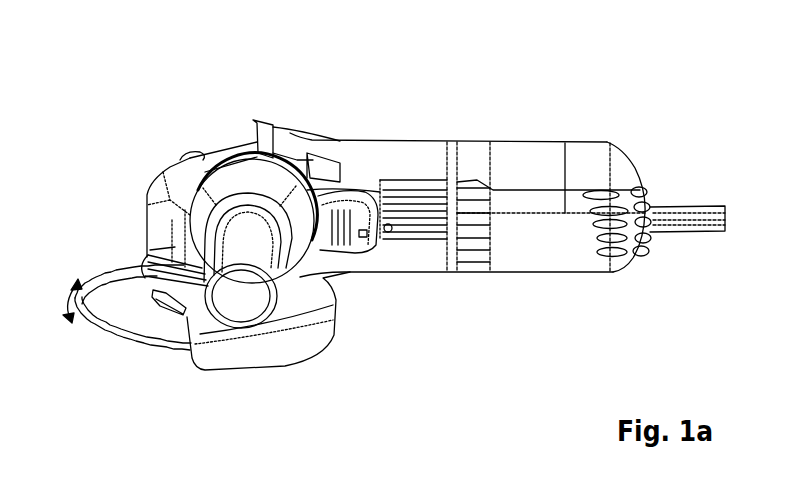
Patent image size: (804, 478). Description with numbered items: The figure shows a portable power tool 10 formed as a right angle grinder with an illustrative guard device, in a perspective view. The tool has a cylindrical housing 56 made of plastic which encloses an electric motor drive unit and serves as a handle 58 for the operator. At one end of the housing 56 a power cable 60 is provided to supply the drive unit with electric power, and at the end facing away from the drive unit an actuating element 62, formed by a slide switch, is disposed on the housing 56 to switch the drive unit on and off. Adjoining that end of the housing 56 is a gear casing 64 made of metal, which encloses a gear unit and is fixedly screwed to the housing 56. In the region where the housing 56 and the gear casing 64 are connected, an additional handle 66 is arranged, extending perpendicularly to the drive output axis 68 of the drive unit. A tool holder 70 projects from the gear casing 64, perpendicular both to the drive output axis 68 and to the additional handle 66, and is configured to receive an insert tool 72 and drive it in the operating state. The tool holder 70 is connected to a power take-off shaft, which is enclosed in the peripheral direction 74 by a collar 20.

The gear head housing 10 is at (297, 353).
The collar 20 is at (138, 268).
The housing 56 is at (388, 152).
The handle 58 is at (510, 155).
The power cable 60 is at (680, 217).
The actuating element 62 is at (360, 233).
The gear casing 64 is at (165, 177).
The additional handle 66 is at (238, 330).
The drive output axis 68 is at (565, 143).
The tool holder 70 is at (93, 275).
The insert tool 72 is at (123, 326).
The peripheral direction 74 is at (63, 295).